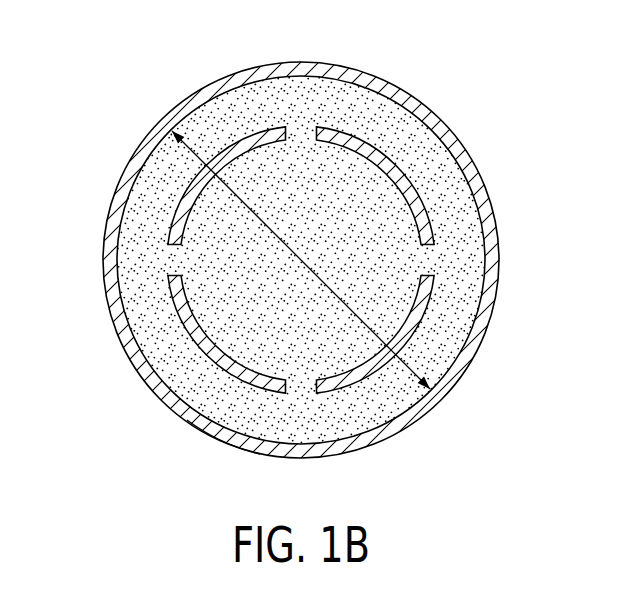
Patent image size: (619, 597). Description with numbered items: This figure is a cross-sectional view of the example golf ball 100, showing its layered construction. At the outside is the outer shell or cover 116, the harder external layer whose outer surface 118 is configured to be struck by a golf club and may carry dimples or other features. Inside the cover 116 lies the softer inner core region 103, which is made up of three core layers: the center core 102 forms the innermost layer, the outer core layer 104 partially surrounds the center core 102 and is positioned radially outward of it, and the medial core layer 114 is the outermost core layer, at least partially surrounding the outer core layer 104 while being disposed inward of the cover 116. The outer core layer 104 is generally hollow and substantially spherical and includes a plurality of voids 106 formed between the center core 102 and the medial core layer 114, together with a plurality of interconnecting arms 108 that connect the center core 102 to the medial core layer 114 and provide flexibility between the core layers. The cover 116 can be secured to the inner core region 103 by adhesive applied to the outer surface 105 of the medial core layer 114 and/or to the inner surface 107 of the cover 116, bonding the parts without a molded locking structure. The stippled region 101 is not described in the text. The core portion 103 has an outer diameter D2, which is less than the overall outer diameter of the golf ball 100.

The golf ball 100 is at (309, 280).
The stippled filler region 101 is at (364, 393).
The center core 102 is at (309, 280).
The inner core region 103 is at (387, 288).
The outer core layer 104 is at (386, 160).
The outer surface of medial core layer 105 is at (301, 260).
The voids 106 is at (263, 132).
The inner surface of cover 107 is at (385, 90).
The interconnecting arms 108 is at (173, 253).
The medial core layer 114 is at (438, 358).
The cover 116 is at (309, 280).
The outer surface of cover 118 is at (186, 419).
The outer diameter of inner core region D2 is at (196, 150).